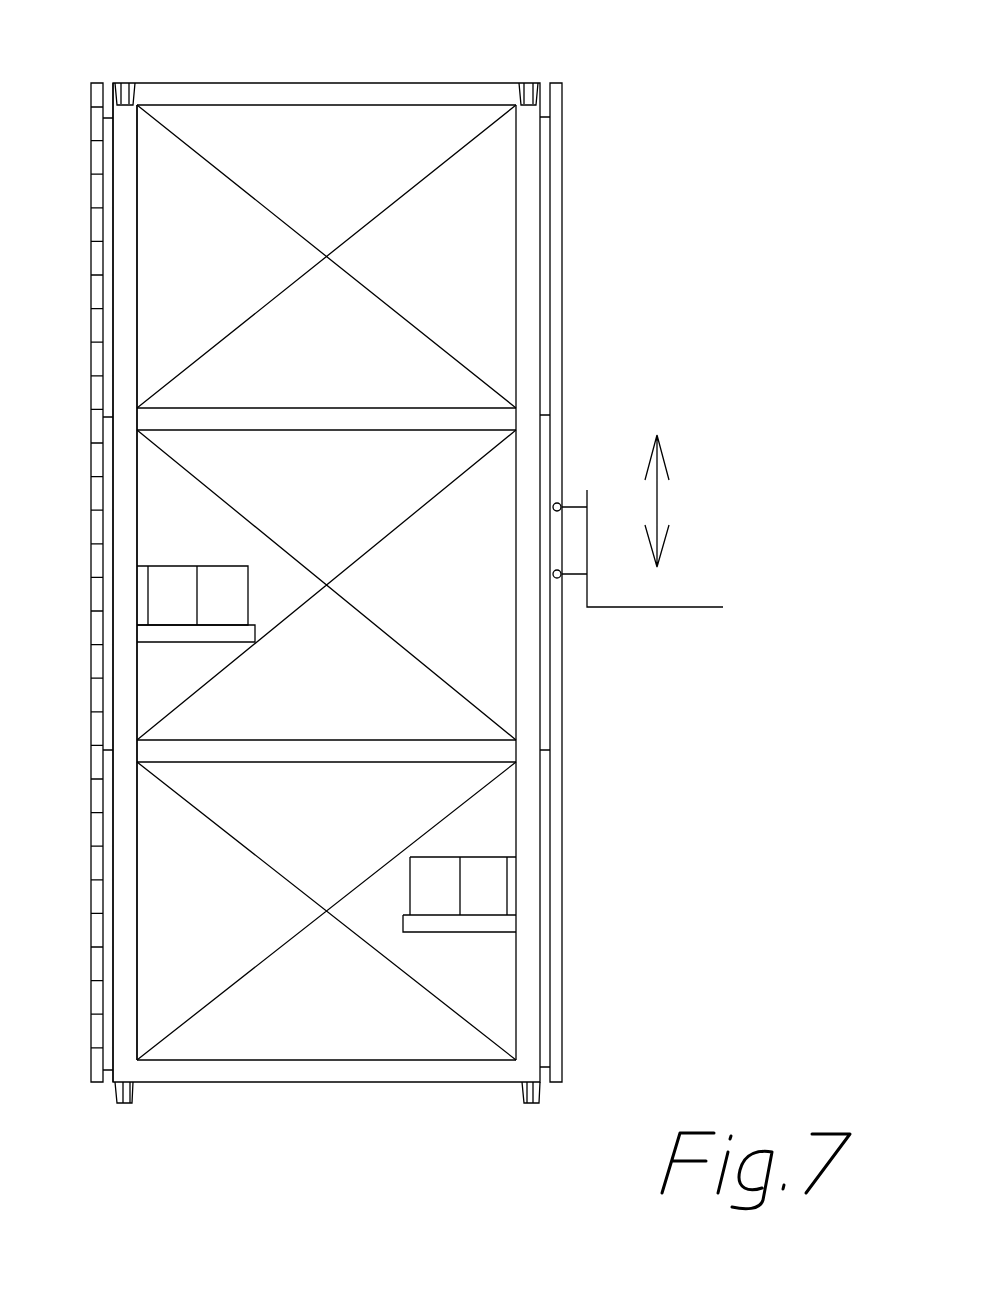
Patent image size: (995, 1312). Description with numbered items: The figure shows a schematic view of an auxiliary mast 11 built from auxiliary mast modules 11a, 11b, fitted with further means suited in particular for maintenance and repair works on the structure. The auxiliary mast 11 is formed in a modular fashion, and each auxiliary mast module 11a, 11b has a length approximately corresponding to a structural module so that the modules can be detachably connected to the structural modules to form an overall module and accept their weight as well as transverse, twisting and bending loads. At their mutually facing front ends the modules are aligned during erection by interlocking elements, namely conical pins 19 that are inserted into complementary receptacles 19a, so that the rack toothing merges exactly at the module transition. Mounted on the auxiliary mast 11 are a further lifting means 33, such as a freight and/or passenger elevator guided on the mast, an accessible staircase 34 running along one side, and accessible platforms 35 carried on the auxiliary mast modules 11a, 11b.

The auxiliary mast 11 is at (568, 141).
The auxiliary mast module 11a is at (527, 210).
The auxiliary mast module 11b is at (404, 582).
The conical pin 19 is at (135, 1085).
The receptacle 19a is at (122, 83).
The further lifting means 33 is at (587, 522).
The accessible staircase 34 is at (90, 262).
The accessible platform 35 is at (160, 632).